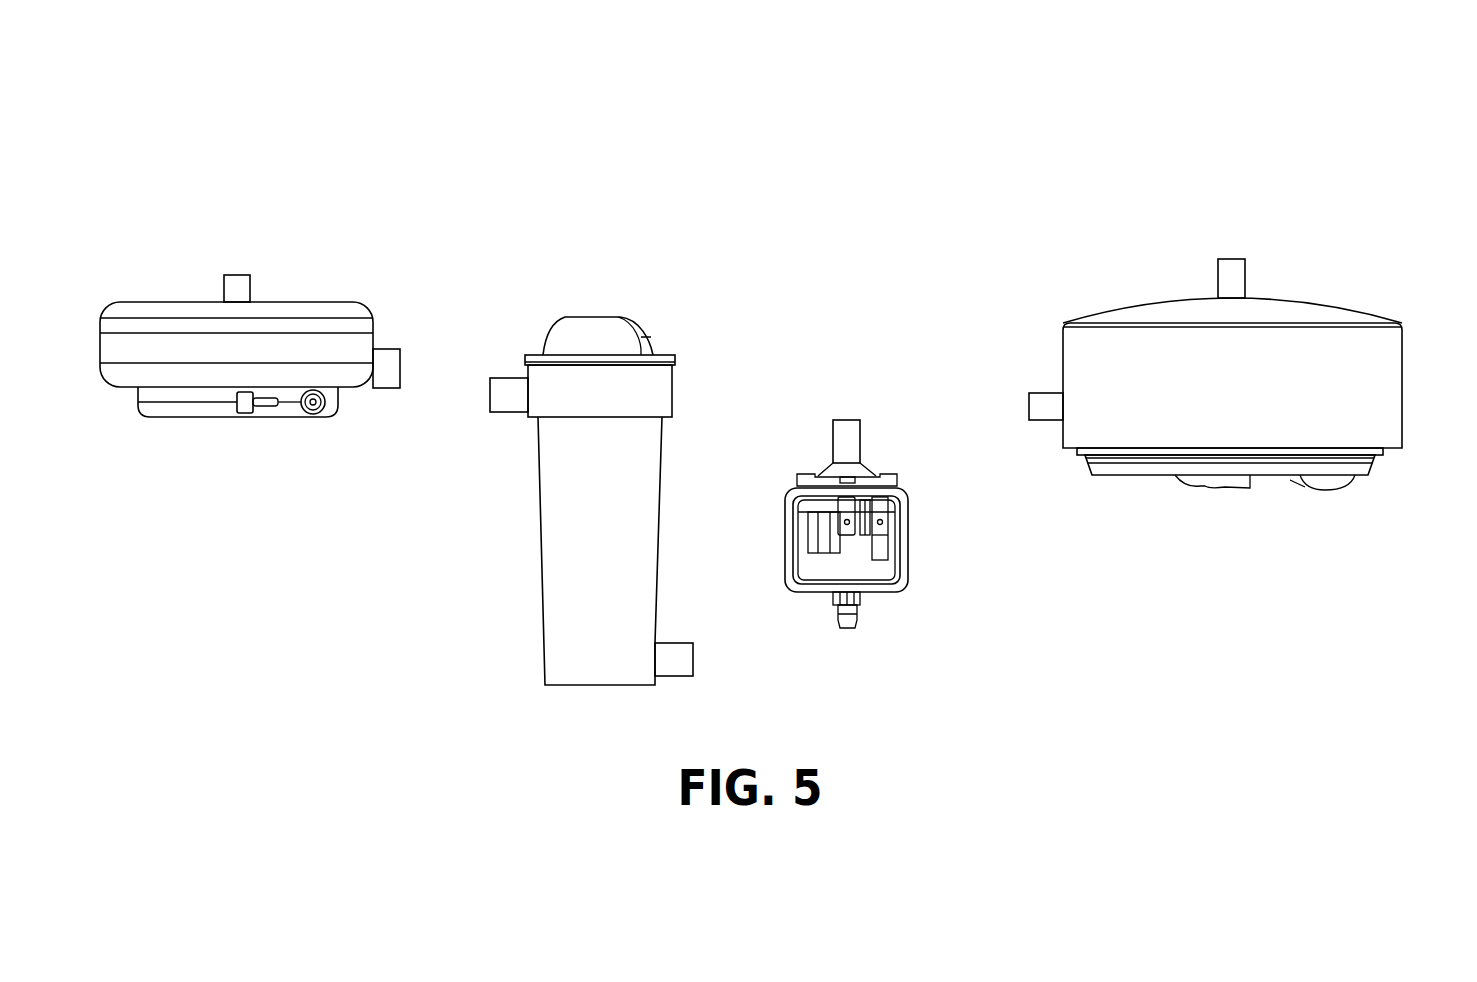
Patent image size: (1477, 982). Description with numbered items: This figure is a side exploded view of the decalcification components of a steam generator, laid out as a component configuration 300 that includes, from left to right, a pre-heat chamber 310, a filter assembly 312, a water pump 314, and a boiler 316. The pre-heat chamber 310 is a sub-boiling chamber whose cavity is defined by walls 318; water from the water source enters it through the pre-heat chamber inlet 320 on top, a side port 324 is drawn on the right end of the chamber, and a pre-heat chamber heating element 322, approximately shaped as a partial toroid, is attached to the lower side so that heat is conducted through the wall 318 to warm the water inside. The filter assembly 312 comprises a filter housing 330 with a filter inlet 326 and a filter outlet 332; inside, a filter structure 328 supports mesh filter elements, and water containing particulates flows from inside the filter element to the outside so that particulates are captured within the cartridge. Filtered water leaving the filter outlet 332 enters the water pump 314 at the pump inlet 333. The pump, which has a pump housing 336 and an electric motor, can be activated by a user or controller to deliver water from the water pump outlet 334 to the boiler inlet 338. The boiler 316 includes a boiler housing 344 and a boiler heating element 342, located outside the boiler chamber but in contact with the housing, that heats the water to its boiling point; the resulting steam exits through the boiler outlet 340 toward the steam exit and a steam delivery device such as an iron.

The component configuration 300 is at (265, 122).
The pre-heat chamber 310 is at (193, 283).
The filter assembly 312 is at (537, 688).
The water pump 314 is at (908, 605).
The boiler 316 is at (1312, 270).
The walls 318 is at (105, 305).
The pre-heat chamber inlet 320 is at (241, 275).
The pre-heat chamber heating element 322 is at (185, 418).
The tank outlet port 324 is at (400, 368).
The filter inlet 326 is at (485, 395).
The filter structure 328 is at (598, 316).
The filter housing 330 is at (540, 583).
The filter outlet 332 is at (695, 655).
The pump inlet 333 is at (848, 630).
The water pump outlet 334 is at (847, 419).
The pump housing 336 is at (908, 570).
The boiler inlet 338 is at (1028, 407).
The boiler outlet 340 is at (1235, 258).
The boiler heating element 342 is at (1287, 467).
The boiler housing 344 is at (1402, 403).